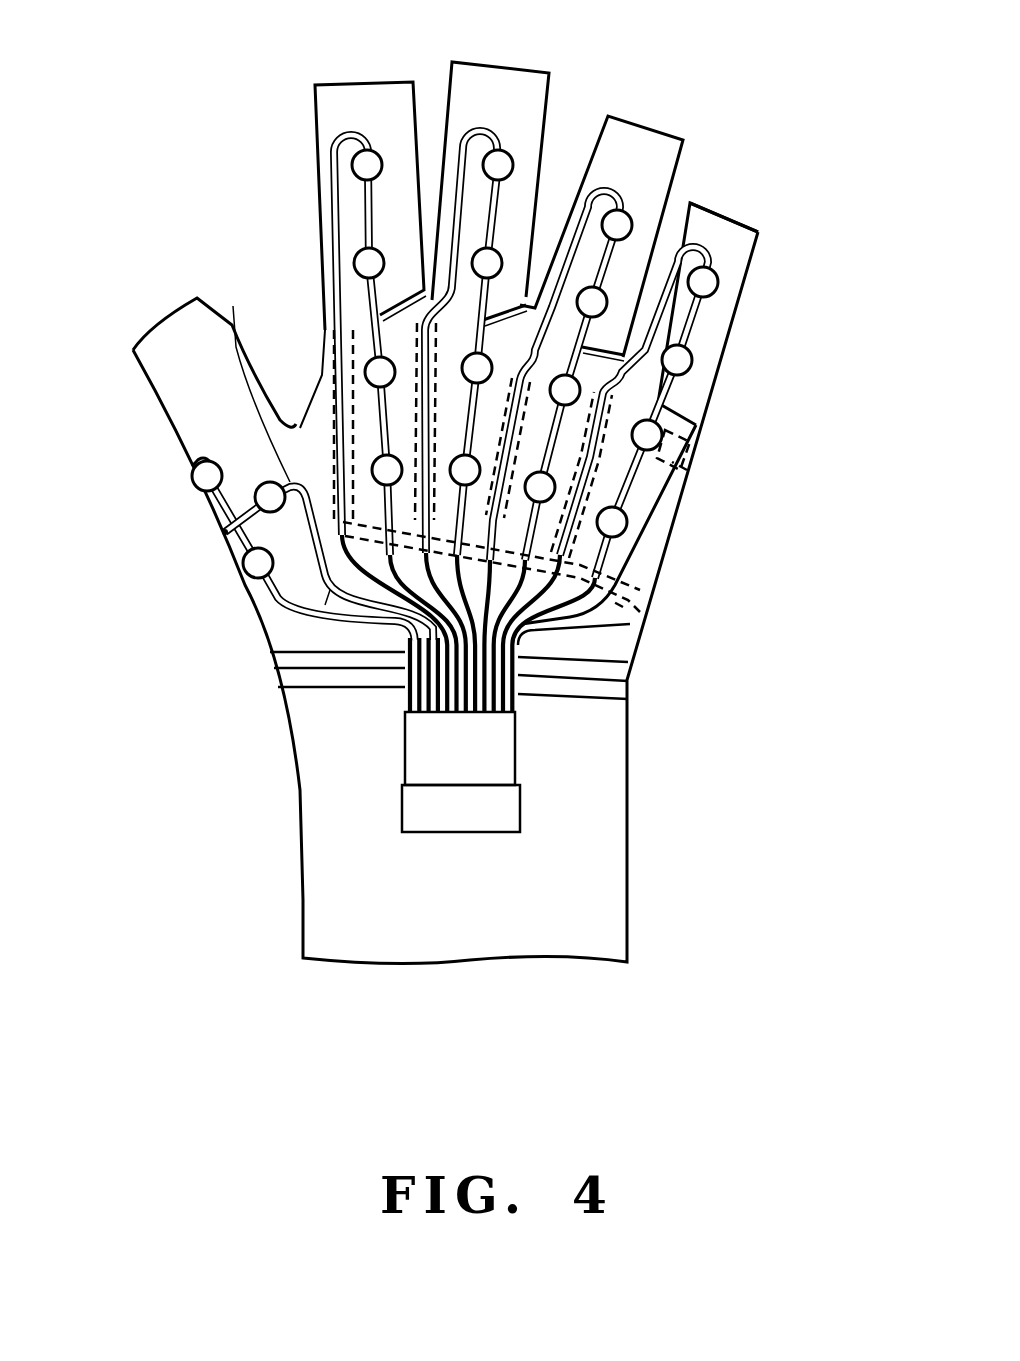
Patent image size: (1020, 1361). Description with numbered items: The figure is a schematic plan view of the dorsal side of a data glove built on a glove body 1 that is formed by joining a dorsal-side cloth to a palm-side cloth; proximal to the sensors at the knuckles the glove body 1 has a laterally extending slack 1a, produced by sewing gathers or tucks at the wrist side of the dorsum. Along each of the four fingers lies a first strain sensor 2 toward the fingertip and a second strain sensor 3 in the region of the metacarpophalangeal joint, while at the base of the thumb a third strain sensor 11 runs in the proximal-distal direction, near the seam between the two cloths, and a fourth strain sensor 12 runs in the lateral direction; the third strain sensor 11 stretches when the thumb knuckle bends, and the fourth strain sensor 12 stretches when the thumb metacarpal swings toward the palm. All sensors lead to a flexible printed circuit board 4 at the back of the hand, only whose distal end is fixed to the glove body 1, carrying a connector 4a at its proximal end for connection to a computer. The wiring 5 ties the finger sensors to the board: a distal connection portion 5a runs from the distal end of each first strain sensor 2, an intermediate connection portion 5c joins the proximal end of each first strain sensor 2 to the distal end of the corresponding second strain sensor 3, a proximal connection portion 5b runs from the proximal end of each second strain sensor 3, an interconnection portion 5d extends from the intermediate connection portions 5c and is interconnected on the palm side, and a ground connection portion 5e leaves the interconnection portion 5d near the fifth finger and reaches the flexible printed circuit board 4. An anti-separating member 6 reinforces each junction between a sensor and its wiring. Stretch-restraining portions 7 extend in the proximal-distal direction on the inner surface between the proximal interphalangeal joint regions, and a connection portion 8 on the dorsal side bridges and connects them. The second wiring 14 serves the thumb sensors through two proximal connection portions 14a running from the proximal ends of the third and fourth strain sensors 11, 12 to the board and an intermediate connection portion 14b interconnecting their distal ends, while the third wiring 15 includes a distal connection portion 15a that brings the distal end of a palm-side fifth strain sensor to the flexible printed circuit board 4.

The glove body 1 is at (636, 745).
The slack 1a is at (587, 683).
The first strain sensor 2 is at (462, 140).
The second strain sensor 3 is at (457, 227).
The flexible printed circuit board 4 is at (533, 765).
The connector 4a is at (523, 810).
The wiring 5 is at (697, 232).
The distal connection portion 5a is at (708, 257).
The proximal connection portion 5b is at (640, 557).
The intermediate connection portion 5c is at (697, 390).
The interconnection portion 5d is at (700, 428).
The ground connection portion 5e is at (603, 620).
The anti-separating member 6 is at (200, 476).
The stretch-restraining portion 7 is at (687, 470).
The connection portion 8 is at (623, 607).
The third strain sensor 11 is at (215, 525).
The fourth strain sensor 12 is at (225, 535).
The second wiring 14 is at (326, 622).
The proximal connection portion 14a is at (288, 488).
The intermediate connection portion 14b is at (190, 458).
The third wiring 15 is at (253, 379).
The distal connection portion 15a is at (310, 453).